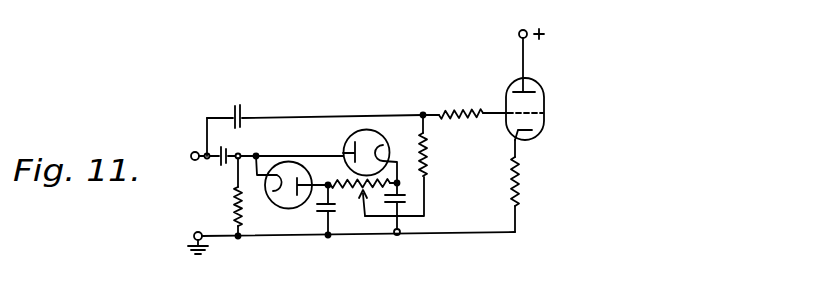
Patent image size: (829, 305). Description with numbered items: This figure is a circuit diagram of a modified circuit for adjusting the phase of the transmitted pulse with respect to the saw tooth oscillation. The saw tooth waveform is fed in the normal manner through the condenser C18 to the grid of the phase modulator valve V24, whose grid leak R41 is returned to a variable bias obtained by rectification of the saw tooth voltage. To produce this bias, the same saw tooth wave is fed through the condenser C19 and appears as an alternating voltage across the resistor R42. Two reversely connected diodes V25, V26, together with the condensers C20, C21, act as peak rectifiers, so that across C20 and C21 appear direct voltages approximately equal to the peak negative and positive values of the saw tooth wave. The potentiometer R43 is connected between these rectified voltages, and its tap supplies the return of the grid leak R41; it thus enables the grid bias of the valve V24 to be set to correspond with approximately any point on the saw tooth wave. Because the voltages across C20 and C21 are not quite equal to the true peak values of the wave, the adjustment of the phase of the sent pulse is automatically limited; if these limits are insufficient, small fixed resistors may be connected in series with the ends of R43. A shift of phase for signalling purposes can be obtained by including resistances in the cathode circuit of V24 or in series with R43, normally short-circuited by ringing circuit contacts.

The condenser C18 is at (237, 109).
The condenser C19 is at (214, 172).
The condenser C20 is at (336, 210).
The condenser C21 is at (404, 203).
The grid leak R41 is at (427, 160).
The resistor R42 is at (235, 214).
The potentiometer R43 is at (341, 178).
The phase modulator valve V24 is at (507, 92).
The diode V25 is at (289, 208).
The diode V26 is at (359, 117).